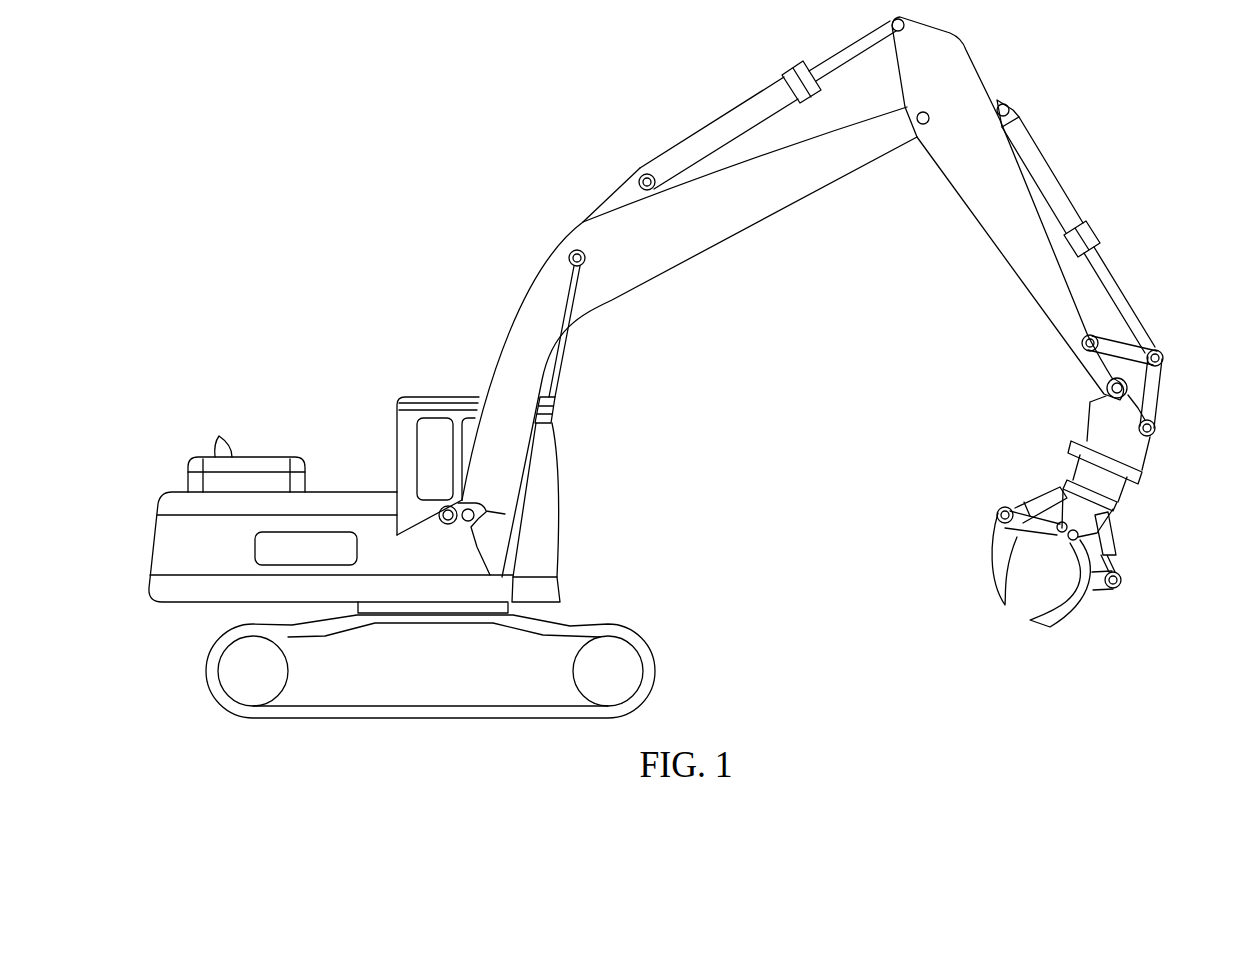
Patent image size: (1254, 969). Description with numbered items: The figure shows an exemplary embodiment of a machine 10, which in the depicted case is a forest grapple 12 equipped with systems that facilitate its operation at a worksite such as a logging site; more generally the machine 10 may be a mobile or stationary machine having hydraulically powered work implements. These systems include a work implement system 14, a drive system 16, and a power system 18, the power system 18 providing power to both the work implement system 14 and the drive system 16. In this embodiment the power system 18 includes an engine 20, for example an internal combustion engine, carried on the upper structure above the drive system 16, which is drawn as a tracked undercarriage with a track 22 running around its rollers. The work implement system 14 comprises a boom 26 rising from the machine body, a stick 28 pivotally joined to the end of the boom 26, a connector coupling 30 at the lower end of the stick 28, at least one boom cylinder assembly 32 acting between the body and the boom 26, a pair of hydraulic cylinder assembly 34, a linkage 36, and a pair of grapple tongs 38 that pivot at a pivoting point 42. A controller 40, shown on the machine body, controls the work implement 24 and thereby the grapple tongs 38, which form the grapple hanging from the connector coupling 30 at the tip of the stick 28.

The machine 10 is at (310, 130).
The forest grapple 12 is at (408, 305).
The work implement system 14 is at (1143, 35).
The drive system 16 is at (654, 628).
The power system 18 is at (147, 510).
The engine 20 is at (254, 452).
The track / ground engaging member 22 is at (651, 656).
The work implement 24 is at (921, 552).
The boom 26 is at (612, 300).
The stick 28 is at (1012, 267).
The connector coupling 30 is at (1100, 388).
The boom cylinder assembly 32 is at (560, 420).
The hydraulic cylinder assembly 34 is at (1027, 500).
The linkage 36 is at (996, 513).
The grapple tongs 38 is at (995, 572).
The controller 40 is at (306, 548).
The pivoting point 42 is at (1058, 538).